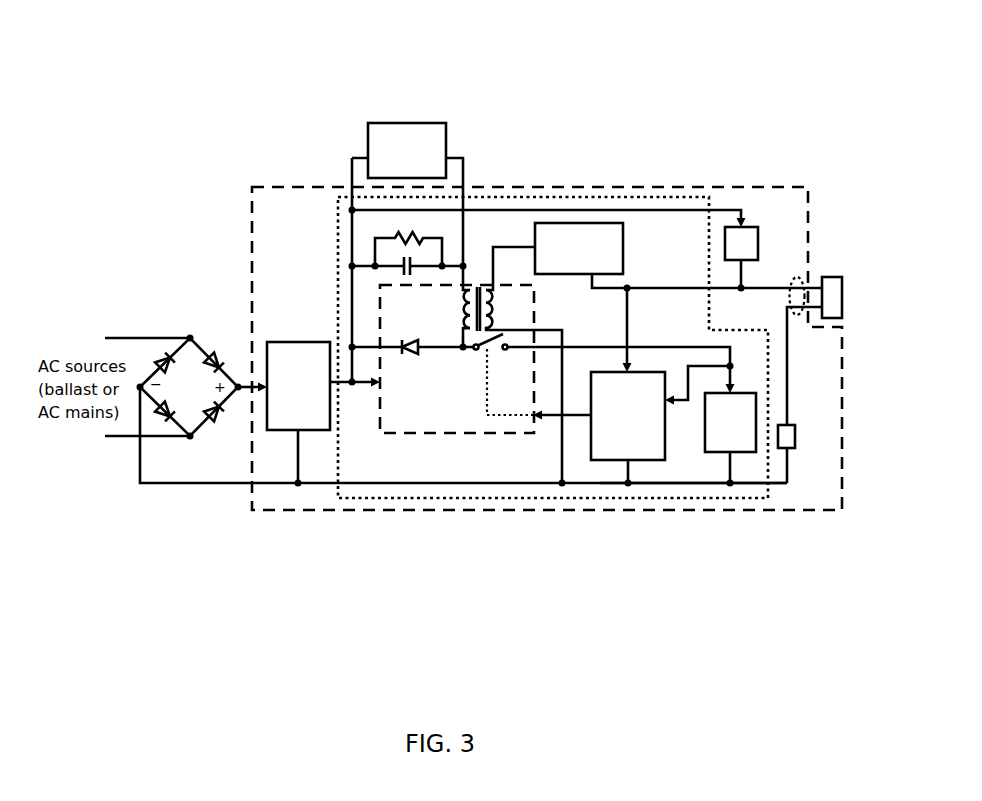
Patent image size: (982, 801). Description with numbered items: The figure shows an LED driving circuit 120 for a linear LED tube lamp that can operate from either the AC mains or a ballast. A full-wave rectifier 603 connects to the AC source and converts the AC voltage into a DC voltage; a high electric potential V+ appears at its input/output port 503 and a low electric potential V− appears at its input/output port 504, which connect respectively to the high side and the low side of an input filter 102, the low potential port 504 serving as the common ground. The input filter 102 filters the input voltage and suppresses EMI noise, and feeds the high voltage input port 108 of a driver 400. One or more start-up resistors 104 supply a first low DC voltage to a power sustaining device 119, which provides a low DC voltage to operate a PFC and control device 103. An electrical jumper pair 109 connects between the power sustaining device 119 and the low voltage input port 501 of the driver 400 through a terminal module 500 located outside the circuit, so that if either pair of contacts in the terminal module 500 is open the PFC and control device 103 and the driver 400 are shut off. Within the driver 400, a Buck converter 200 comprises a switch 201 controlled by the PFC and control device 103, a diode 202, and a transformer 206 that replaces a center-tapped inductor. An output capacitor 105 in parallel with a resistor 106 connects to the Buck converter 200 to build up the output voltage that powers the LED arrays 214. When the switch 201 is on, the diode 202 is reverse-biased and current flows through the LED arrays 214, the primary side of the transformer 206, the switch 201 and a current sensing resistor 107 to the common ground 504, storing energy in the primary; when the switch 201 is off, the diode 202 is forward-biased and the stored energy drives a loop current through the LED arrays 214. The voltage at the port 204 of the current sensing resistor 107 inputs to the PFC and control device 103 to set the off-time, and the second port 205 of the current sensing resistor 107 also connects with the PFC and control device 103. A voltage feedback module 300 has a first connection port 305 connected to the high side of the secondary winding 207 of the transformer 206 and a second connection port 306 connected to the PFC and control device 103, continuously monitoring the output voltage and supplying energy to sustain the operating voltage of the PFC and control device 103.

The LED driving circuit 120 is at (257, 180).
The driver 400 is at (339, 185).
The full-wave rectifier 603 is at (164, 326).
The input/output port 503 is at (237, 382).
The input/output port 504 is at (143, 390).
The input filter 102 is at (303, 342).
The high voltage input port 108 is at (350, 345).
The LED arrays 214 is at (390, 123).
The resistor 106 is at (422, 247).
The output capacitor 105 is at (405, 278).
The Buck converter 200 is at (528, 446).
The diode 202 is at (413, 353).
The transformer 206 is at (478, 285).
The secondary winding 207 is at (492, 297).
The first connection port 305 is at (507, 246).
The switch 201 is at (485, 351).
The voltage feedback module 300 is at (600, 223).
The second connection port 306 is at (613, 292).
The low voltage input port 501 is at (629, 358).
The start-up resistors 104 is at (752, 227).
The electrical jumper pair 109 is at (798, 277).
The terminal module 500 is at (828, 277).
The power sustaining device 119 is at (789, 450).
The PFC and control device 103 is at (613, 463).
The port 204 is at (733, 366).
The current sensing resistor 107 is at (720, 453).
The second port 205 is at (740, 487).